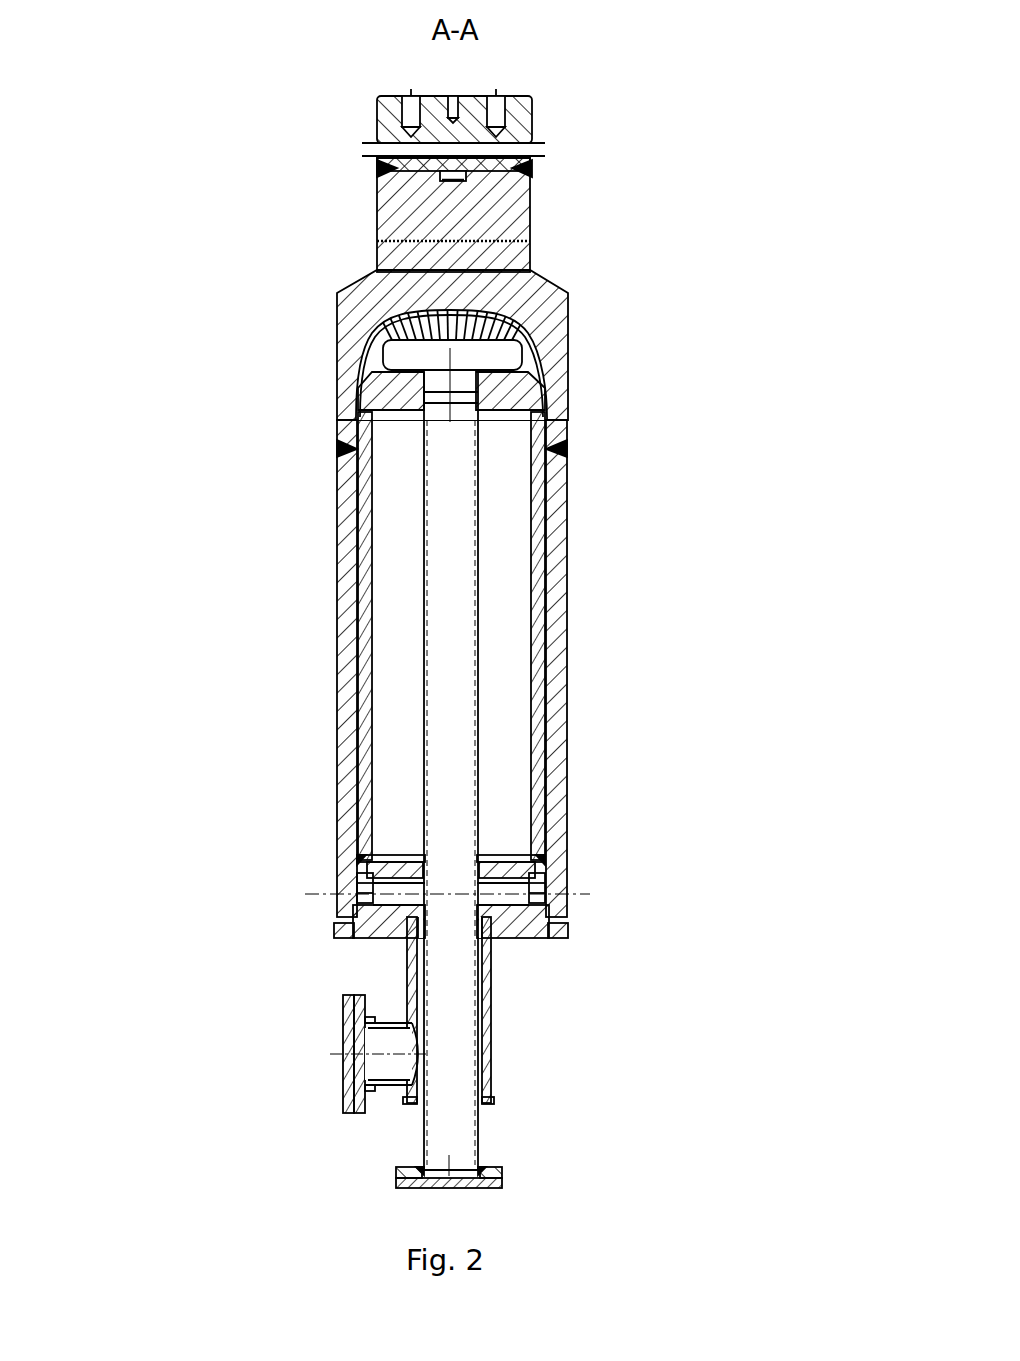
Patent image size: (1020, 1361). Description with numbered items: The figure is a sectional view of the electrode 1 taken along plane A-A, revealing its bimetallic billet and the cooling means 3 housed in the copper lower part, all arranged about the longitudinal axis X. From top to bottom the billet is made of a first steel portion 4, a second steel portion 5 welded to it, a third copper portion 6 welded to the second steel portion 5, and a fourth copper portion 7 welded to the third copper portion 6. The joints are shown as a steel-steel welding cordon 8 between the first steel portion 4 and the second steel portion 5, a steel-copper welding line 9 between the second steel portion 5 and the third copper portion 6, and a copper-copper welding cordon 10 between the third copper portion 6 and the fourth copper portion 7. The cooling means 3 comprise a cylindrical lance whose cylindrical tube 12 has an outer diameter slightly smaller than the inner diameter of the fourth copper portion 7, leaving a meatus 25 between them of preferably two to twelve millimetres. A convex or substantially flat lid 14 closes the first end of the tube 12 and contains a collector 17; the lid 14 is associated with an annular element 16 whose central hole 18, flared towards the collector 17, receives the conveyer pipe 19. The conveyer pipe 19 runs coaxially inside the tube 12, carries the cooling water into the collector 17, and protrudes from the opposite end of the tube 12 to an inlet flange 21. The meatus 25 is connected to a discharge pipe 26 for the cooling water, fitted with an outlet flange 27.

The electrode 1 is at (724, 168).
The cooling means 3 is at (370, 305).
The first steel portion 4 is at (380, 96).
The second steel portion 5 is at (397, 213).
The third copper portion 6 is at (345, 329).
The fourth copper portion 7 is at (345, 708).
The steel-steel welding cordon 8 is at (540, 163).
The steel-copper welding line 9 is at (530, 226).
The copper-copper welding cordon 10 is at (347, 448).
The cylindrical tube 12 is at (545, 551).
The lid 14 is at (522, 337).
The annular element 16 is at (360, 364).
The collector 17 is at (495, 355).
The central hole 18 is at (457, 396).
The conveyer pipe 19 is at (478, 700).
The inlet flange 21 is at (500, 1172).
The meatus 25 is at (360, 562).
The discharge pipe 26 is at (398, 897).
The outlet flange 27 is at (345, 1081).
The longitudinal axis X is at (455, 85).